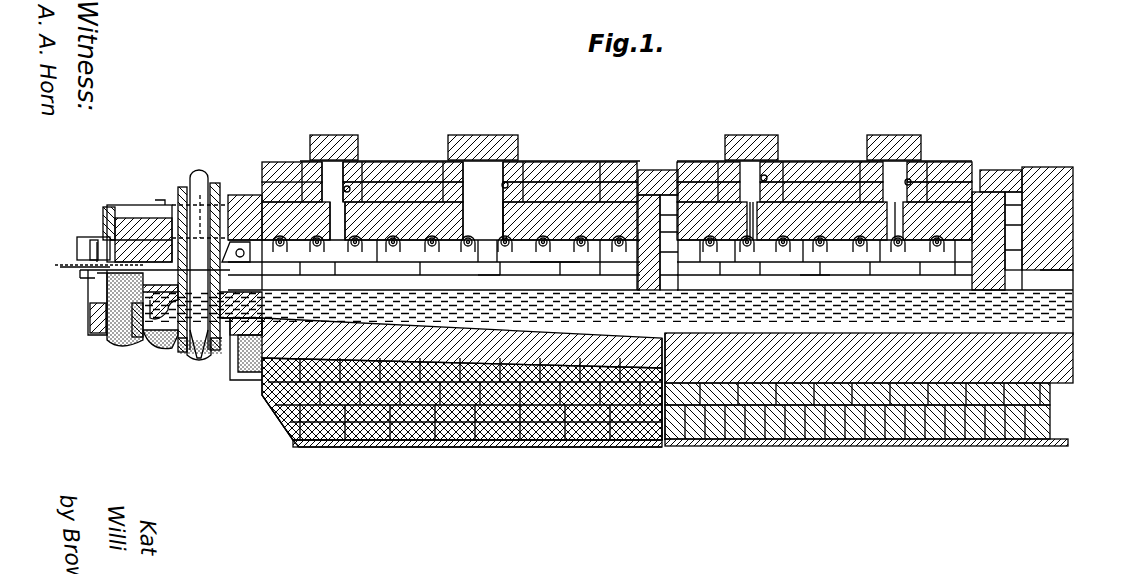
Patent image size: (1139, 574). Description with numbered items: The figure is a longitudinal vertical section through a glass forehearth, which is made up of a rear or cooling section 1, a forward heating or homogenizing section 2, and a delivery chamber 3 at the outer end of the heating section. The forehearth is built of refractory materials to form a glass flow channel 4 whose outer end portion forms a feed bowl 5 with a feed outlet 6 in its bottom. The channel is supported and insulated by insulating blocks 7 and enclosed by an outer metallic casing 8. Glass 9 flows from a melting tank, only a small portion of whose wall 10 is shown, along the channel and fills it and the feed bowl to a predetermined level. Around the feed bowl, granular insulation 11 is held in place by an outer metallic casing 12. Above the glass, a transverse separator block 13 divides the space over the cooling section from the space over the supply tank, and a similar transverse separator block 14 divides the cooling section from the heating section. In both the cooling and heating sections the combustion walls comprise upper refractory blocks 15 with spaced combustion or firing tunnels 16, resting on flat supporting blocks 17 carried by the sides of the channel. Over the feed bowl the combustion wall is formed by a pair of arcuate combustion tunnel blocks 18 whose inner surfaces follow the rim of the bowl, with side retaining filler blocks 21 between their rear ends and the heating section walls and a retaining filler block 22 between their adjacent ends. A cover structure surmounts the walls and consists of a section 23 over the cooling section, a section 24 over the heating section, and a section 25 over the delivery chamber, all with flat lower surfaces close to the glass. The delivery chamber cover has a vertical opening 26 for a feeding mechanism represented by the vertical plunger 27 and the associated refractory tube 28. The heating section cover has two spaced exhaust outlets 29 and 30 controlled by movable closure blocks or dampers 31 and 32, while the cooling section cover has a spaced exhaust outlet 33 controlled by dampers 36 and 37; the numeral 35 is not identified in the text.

The rear or cooling section 1 is at (815, 275).
The forward heating or homogenizing section 2 is at (483, 290).
The delivery chamber 3 is at (468, 290).
The refractory glass flow channel 4 is at (765, 425).
The feed bowl 5 is at (132, 348).
The feed outlet 6 is at (192, 352).
The insulating blocks 7 is at (460, 400).
The outer metallic casing 8 is at (625, 447).
The glass 9 is at (577, 315).
The wall of the melting tank 10 is at (1073, 195).
The granular insulation 11 is at (118, 330).
The outer metallic casing 12 is at (95, 310).
The transverse separator block 13 is at (1000, 185).
The transverse separator block 14 is at (650, 205).
The upper refractory blocks 15 is at (530, 248).
The combustion or firing tunnels 16 is at (432, 252).
The inner flat supporting blocks 17 is at (551, 262).
The combustion tunnel blocks 18 is at (140, 232).
The side retaining filler blocks 21 is at (247, 260).
The retaining filler block 22 is at (92, 258).
The cover structure section 23 is at (815, 162).
The cover structure section 24 is at (565, 162).
The cover structure section 25 is at (250, 195).
The vertical opening 26 is at (175, 200).
The vertical plunger 27 is at (192, 175).
The refractory tube 28 is at (215, 183).
The vent or exhaust outlet 29 is at (350, 188).
The vent or exhaust outlet 30 is at (508, 184).
The movable closure block or damper 31 is at (318, 135).
The movable closure block or damper 32 is at (490, 135).
The vertical vent or exhaust outlet 33 is at (767, 177).
The right end slot opening 35 is at (911, 181).
The movable closure block or damper 36 is at (745, 135).
The movable closure block or damper 37 is at (895, 135).